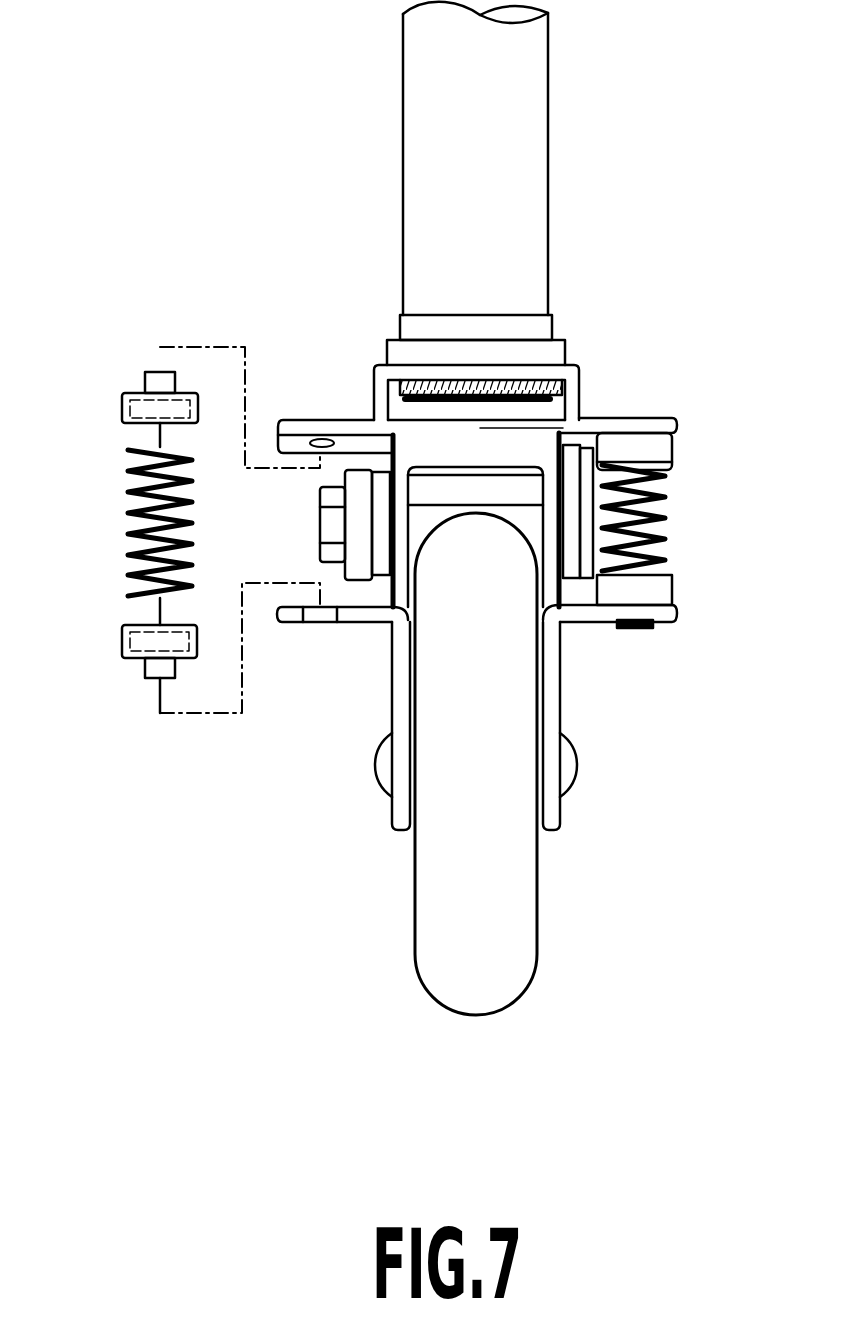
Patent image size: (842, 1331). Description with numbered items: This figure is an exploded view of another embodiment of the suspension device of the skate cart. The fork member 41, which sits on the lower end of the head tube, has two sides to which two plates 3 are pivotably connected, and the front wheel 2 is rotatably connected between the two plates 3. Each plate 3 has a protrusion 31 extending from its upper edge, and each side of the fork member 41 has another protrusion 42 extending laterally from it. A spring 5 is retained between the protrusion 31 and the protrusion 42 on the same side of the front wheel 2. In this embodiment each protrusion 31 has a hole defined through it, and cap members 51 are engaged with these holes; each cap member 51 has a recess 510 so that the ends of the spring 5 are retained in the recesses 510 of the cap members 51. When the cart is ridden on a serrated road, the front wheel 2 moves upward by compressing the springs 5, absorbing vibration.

The front wheel 2 is at (515, 905).
The plate 3 is at (553, 670).
The protrusion 31 is at (363, 613).
The fork member 41 is at (573, 393).
The protrusion 42 is at (343, 435).
The spring 5 is at (663, 520).
The cap member 51 is at (153, 372).
The recess 510 is at (125, 430).